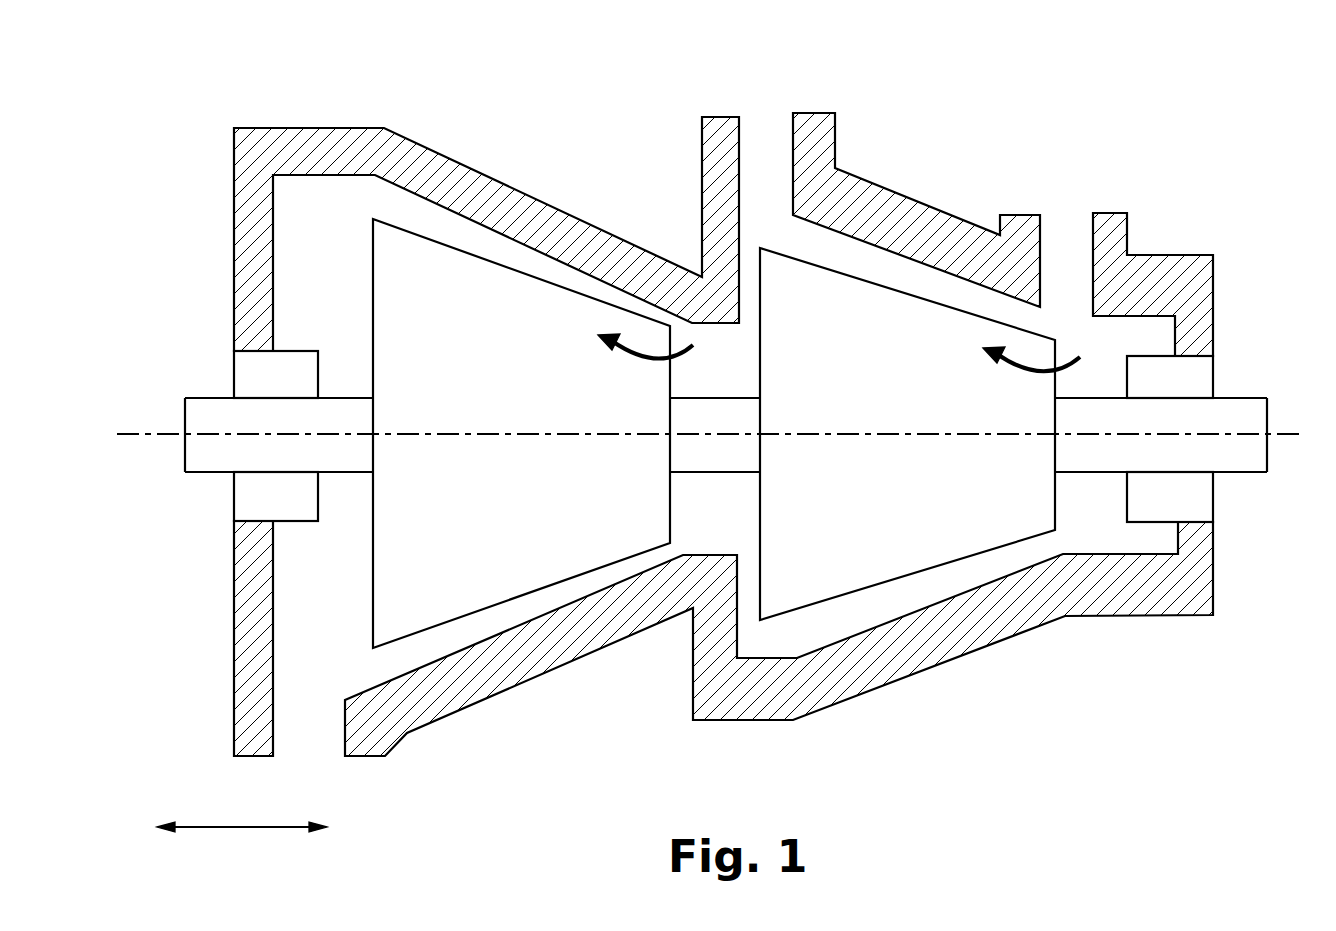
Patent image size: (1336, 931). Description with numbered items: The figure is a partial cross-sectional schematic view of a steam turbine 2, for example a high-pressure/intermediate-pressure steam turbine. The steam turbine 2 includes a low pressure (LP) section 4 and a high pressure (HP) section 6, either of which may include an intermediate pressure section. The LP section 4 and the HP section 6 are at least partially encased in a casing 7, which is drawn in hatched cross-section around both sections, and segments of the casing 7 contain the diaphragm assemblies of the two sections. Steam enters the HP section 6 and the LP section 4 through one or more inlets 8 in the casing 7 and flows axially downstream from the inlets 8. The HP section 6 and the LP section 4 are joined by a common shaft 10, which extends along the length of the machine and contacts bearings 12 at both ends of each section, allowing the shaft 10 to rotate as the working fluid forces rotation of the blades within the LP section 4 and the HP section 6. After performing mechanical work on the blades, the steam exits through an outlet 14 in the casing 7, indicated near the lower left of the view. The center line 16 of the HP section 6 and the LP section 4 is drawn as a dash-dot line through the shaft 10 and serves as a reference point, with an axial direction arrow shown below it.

The steam turbine 2 is at (224, 80).
The low pressure (LP) section 4 is at (533, 433).
The high pressure (HP) section 6 is at (920, 434).
The casing 7 is at (481, 172).
The inlets 8 is at (752, 110).
The common shaft 10 is at (346, 398).
The bearings 12 is at (723, 436).
The outlet 14 is at (326, 769).
The center line (CL) 16 is at (706, 403).